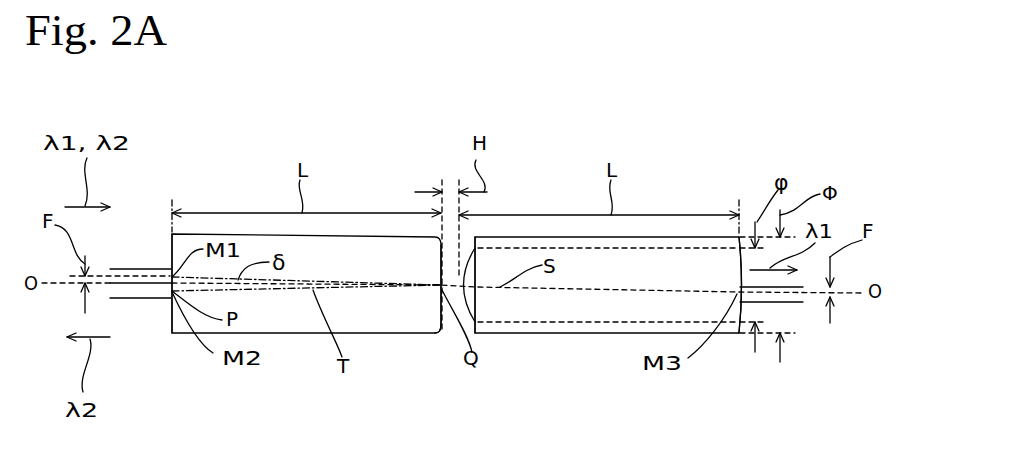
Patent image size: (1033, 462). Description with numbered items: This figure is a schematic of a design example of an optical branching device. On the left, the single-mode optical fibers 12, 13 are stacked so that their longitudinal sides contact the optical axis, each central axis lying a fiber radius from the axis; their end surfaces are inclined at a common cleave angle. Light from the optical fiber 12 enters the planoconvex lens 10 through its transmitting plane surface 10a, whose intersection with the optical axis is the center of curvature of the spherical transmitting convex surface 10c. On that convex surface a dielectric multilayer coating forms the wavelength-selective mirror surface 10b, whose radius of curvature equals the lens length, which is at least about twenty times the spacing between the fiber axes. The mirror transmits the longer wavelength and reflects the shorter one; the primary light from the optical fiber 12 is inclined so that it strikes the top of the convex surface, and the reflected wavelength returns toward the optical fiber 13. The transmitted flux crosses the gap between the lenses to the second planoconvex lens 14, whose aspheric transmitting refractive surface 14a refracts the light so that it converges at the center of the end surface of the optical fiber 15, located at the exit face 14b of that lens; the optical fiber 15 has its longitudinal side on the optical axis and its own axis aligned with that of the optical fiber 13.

The planoconvex lens 10 is at (293, 340).
The transmitting plane surface 10a is at (172, 313).
The wavelength-selective mirror surface 10b is at (438, 308).
The transmitting convex surface 10c is at (438, 324).
The optical fiber 12 is at (133, 269).
The optical fiber 13 is at (133, 299).
The planoconvex lens 14 is at (610, 340).
The transmitting refractive surface 14a is at (478, 312).
The exit end face of second GRIN lens 14b is at (739, 310).
The optical fiber 15 is at (792, 302).